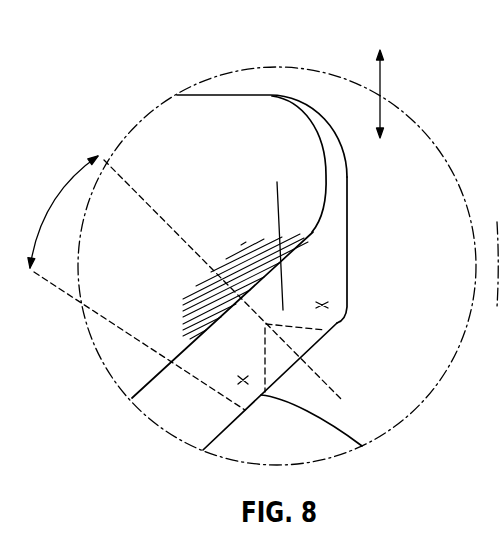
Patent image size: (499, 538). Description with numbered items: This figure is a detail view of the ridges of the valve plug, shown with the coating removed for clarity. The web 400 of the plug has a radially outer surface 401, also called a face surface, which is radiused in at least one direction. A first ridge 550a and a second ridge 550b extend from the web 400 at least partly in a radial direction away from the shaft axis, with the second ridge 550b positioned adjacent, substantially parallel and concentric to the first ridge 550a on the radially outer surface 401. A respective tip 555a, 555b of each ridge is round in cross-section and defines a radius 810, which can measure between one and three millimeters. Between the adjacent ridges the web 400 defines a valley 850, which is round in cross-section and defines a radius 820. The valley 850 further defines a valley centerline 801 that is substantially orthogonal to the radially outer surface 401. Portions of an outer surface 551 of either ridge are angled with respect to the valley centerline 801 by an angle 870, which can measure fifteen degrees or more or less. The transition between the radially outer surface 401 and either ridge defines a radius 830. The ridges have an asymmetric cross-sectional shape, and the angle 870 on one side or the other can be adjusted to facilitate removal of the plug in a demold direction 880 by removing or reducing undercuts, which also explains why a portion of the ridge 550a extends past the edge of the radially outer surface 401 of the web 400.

The web 400 is at (240, 107).
The radially outer surface 401 is at (347, 257).
The first ridge 550a is at (314, 233).
The second ridge 550b is at (236, 400).
The outer surface 551 is at (202, 386).
The tip 555a is at (323, 333).
The tip 555b is at (362, 446).
The valley centerline 801 is at (93, 148).
The radius 810 is at (339, 324).
The radius 820 is at (276, 207).
The radius 830 is at (171, 366).
The valley 850 is at (275, 333).
The angle 870 is at (63, 198).
The demold direction 880 is at (384, 80).